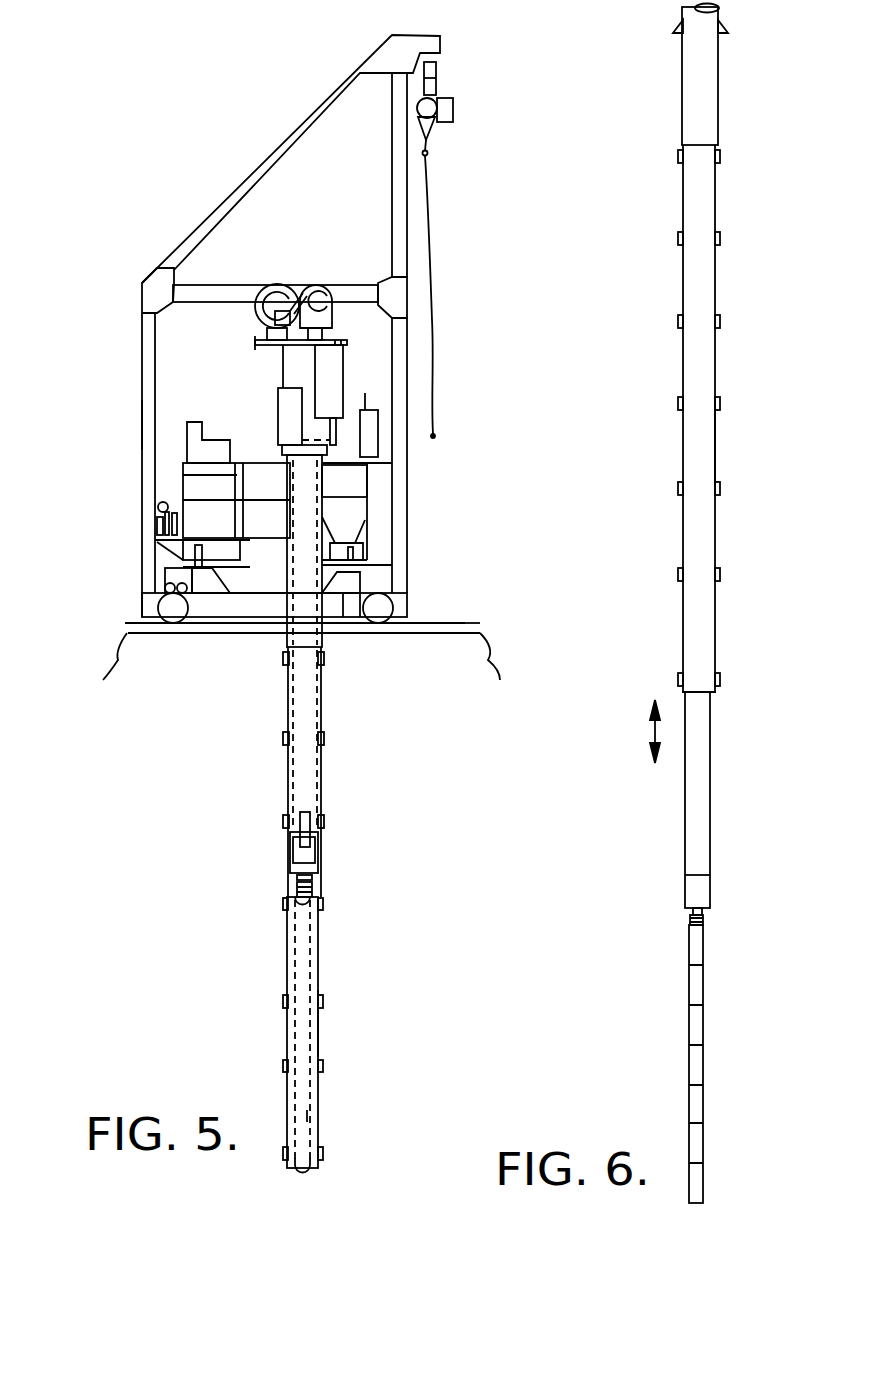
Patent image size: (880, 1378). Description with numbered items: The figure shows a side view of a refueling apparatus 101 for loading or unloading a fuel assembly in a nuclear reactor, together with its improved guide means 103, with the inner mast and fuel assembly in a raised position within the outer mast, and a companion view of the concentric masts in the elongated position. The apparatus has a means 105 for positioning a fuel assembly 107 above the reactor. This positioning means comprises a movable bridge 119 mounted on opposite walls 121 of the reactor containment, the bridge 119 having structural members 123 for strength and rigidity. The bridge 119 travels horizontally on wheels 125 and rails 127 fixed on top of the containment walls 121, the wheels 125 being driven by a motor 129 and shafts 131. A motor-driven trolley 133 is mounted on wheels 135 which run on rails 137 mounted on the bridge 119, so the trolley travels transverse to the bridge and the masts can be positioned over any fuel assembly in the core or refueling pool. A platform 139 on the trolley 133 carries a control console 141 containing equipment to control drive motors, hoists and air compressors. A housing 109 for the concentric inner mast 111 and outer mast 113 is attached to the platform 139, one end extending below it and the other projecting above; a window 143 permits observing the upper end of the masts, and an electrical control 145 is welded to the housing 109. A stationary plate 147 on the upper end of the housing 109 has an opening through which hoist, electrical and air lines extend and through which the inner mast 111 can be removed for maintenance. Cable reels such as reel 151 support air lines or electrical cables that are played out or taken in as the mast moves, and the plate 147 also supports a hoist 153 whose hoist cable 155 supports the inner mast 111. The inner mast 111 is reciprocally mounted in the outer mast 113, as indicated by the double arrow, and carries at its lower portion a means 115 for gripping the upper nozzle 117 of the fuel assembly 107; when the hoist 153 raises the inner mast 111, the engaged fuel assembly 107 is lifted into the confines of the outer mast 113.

In FIG. 5, the apparatus 101 is at (212, 112).
In FIG. 5, the guide means 103 is at (318, 1057).
In FIG. 6, the guide means 103 is at (715, 405).
In FIG. 5, the means for positioning a fuel assembly 105 is at (128, 425).
In FIG. 5, the fuel assembly 107 is at (303, 1117).
In FIG. 6, the fuel assembly 107 is at (698, 1070).
In FIG. 5, the housing 109 is at (325, 503).
In FIG. 6, the housing 109 is at (718, 88).
In FIG. 5, the inner mast 111 is at (298, 782).
In FIG. 6, the inner mast 111 is at (710, 760).
In FIG. 5, the outer mast 113 is at (318, 942).
In FIG. 6, the outer mast 113 is at (716, 283).
In FIG. 5, the means for gripping 115 is at (318, 878).
In FIG. 6, the means for gripping 115 is at (705, 913).
In FIG. 5, the upper nozzle 117 is at (313, 889).
In FIG. 6, the upper nozzle 117 is at (705, 922).
In FIG. 5, the movable bridge 119 is at (422, 580).
In FIG. 5, the walls 121 is at (482, 633).
In FIG. 5, the structural members 123 is at (238, 603).
In FIG. 5, the wheels 125 is at (185, 624).
In FIG. 5, the rails 127 is at (128, 625).
In FIG. 5, the motor 129 is at (178, 566).
In FIG. 5, the shafts 131 is at (165, 590).
In FIG. 5, the trolley 133 is at (392, 477).
In FIG. 5, the wheels 135 is at (355, 556).
In FIG. 5, the rails 137 is at (357, 568).
In FIG. 5, the platform 139 is at (355, 526).
In FIG. 5, the control console 141 is at (207, 421).
In FIG. 5, the window 143 is at (282, 428).
In FIG. 5, the electrical control 145 is at (337, 388).
In FIG. 5, the stationary plate 147 is at (345, 343).
In FIG. 5, the cable reel 151 is at (272, 284).
In FIG. 5, the hoist 153 is at (318, 286).
In FIG. 5, the hoist cable 155 is at (300, 360).